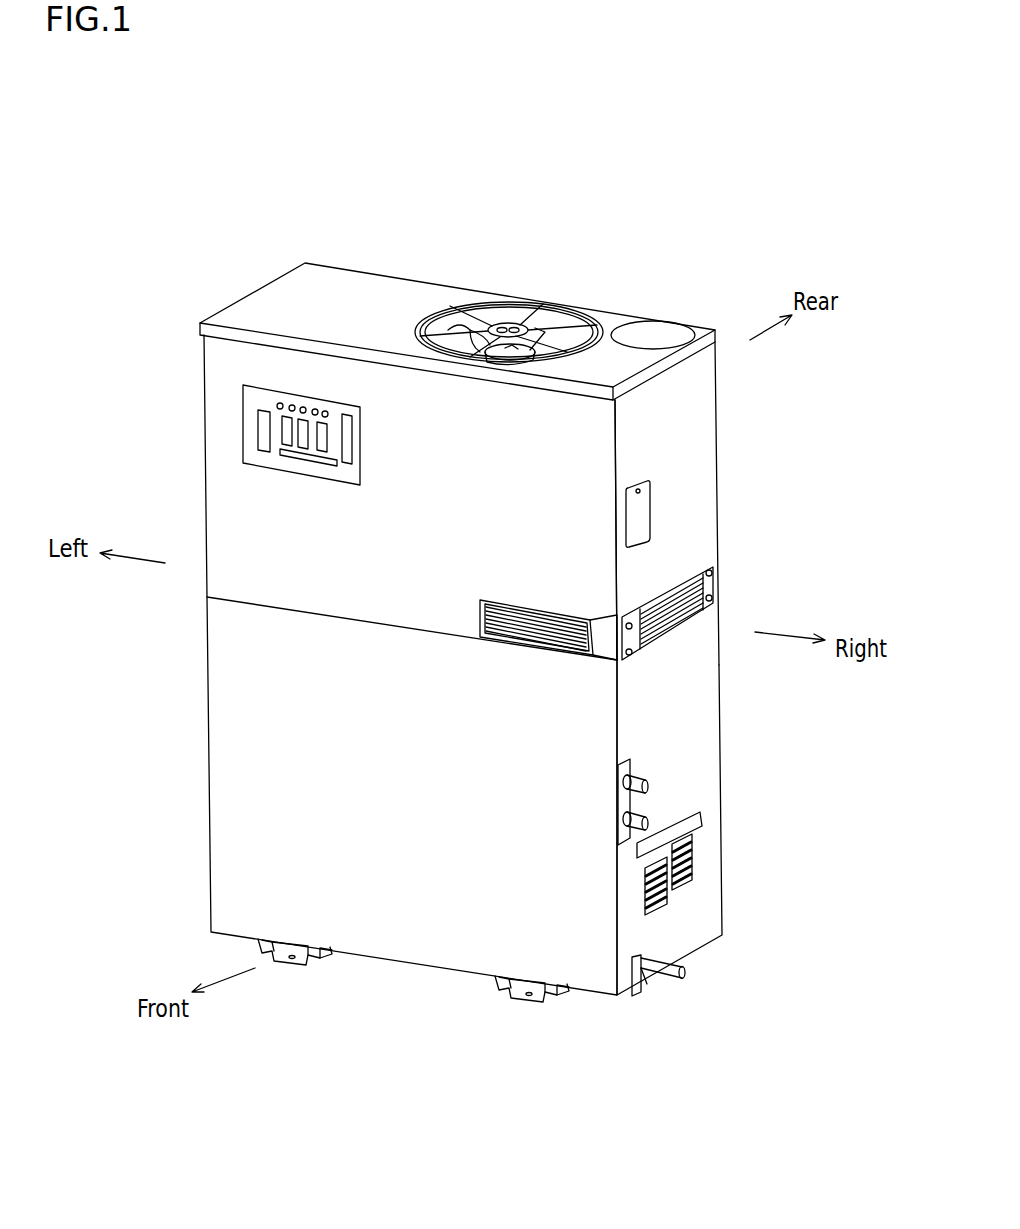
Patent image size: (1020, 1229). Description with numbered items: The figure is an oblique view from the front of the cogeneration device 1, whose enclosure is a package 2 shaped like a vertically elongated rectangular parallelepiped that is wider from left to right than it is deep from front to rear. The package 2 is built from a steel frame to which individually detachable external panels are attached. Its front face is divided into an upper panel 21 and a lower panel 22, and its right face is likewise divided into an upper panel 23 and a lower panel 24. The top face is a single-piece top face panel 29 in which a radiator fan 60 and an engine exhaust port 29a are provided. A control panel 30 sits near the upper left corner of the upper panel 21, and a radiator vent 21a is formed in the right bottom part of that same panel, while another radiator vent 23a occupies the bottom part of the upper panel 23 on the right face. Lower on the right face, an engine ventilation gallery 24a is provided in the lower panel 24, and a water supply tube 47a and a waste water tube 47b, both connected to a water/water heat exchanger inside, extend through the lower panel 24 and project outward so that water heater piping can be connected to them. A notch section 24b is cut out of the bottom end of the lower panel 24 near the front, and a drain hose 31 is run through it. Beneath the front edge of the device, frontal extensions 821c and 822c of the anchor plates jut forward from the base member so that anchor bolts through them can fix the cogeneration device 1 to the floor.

The cogeneration device 1 is at (724, 216).
The package 2 is at (373, 262).
The top face panel 29 is at (278, 296).
The radiator fan 60 is at (506, 316).
The engine exhaust port 29a is at (667, 330).
The control panel 30 is at (277, 423).
The upper panel 21 is at (242, 513).
The radiator vent 21a is at (567, 638).
The lower panel 22 is at (242, 775).
The upper panel 23 is at (690, 470).
The radiator vent 23a is at (693, 603).
The lower panel 24 is at (690, 730).
The engine ventilation gallery 24a is at (693, 860).
The notch section 24b is at (637, 986).
The water supply tube 47a is at (650, 780).
The waste water tube 47b is at (650, 818).
The drain hose 31 is at (681, 977).
The frontal extension 821c is at (291, 960).
The frontal extension 822c is at (522, 993).